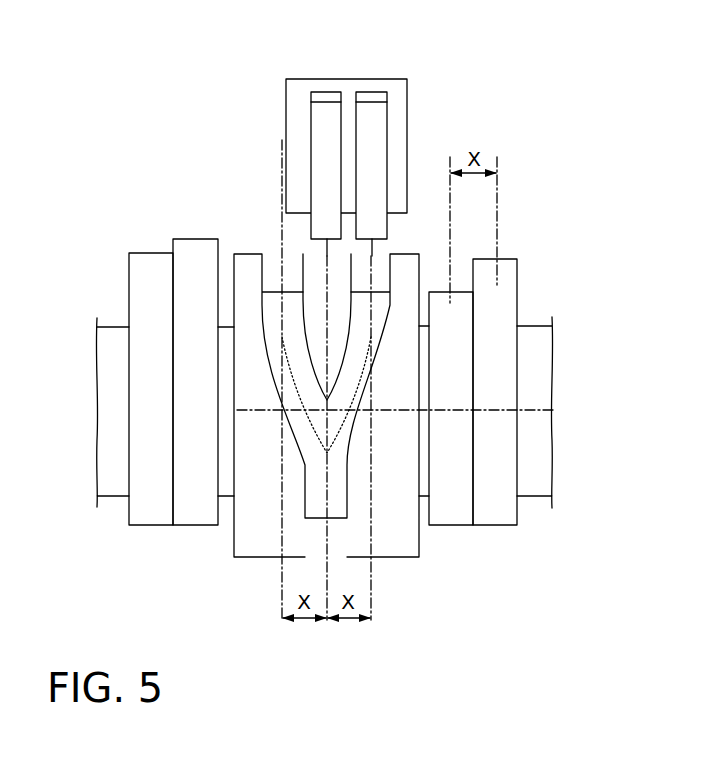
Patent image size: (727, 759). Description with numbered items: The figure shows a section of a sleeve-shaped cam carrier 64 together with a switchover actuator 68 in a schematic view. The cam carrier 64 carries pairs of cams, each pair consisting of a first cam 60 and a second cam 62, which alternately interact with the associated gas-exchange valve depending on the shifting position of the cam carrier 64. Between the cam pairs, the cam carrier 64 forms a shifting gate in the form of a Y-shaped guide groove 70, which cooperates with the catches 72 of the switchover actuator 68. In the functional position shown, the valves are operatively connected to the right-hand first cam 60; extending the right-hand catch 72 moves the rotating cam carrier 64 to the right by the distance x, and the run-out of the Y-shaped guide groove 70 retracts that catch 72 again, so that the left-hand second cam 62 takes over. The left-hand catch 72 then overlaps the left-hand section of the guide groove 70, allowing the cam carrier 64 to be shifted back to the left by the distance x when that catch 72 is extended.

The first cam 60 is at (196, 259).
The second cam 62 is at (151, 265).
The cam carrier 64 is at (535, 410).
The switchover actuator 68 is at (285, 78).
The Y-shaped guide groove 70 is at (326, 461).
The catches 72 is at (372, 119).